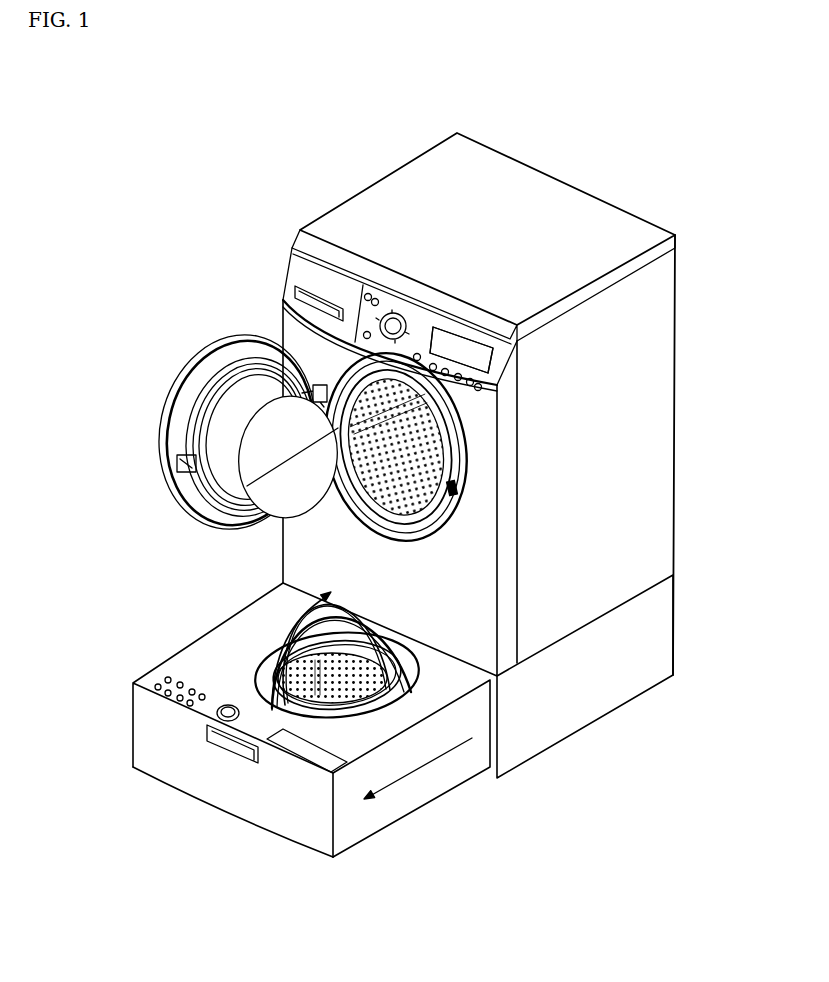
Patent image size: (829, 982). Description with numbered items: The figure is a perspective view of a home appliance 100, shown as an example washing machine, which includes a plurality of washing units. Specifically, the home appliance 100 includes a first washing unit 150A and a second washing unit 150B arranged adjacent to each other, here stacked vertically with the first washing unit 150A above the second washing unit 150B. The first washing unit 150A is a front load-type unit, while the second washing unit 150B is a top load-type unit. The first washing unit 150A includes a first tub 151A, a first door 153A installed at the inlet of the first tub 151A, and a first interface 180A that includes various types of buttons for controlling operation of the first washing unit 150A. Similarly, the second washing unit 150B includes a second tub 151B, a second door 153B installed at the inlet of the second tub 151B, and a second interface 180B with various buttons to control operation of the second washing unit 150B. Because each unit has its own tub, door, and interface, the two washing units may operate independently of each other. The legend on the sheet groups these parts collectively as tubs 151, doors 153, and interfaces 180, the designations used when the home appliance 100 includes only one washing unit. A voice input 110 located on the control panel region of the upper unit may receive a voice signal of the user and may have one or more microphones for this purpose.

The home appliance 100 is at (179, 81).
The voice input 110 is at (371, 283).
The first washing unit 150A is at (684, 391).
The second washing unit 150B is at (688, 622).
The first tub 151A is at (412, 455).
The second tub 151B is at (272, 680).
The first door 153A is at (192, 378).
The second door 153B is at (272, 597).
The first interface 180A is at (500, 386).
The second interface 180B is at (150, 678).
The tub 151 is at (626, 879).
The door 153 is at (626, 911).
The interface 180 is at (626, 945).